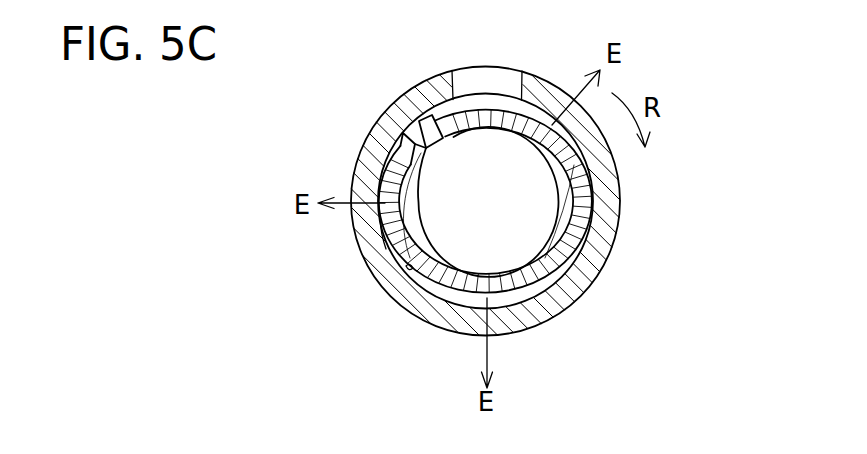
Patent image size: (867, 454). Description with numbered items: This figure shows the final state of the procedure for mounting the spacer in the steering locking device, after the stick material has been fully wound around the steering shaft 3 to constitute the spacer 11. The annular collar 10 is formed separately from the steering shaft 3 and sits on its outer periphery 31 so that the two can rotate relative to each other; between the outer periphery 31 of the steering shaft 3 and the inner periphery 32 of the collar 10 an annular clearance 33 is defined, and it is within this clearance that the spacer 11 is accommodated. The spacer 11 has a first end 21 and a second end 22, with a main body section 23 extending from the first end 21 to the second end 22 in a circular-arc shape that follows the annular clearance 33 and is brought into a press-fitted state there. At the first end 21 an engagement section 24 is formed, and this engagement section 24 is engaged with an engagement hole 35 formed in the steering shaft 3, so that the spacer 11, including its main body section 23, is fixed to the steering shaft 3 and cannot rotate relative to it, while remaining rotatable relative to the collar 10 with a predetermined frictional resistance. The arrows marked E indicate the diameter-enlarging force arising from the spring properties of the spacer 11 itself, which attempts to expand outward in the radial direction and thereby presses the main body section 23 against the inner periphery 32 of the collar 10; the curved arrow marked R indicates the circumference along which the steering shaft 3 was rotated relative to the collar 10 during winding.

The steering shaft 3 is at (546, 259).
The collar 10 is at (621, 207).
The spacer 11 is at (583, 170).
The first end 21 is at (428, 145).
The second end 22 is at (530, 98).
The main body section 23 is at (440, 287).
The engagement section 24 is at (413, 146).
The outer periphery 31 is at (382, 232).
The inner periphery 32 is at (412, 273).
The annular clearance 33 is at (486, 100).
The engagement hole 35 is at (443, 139).